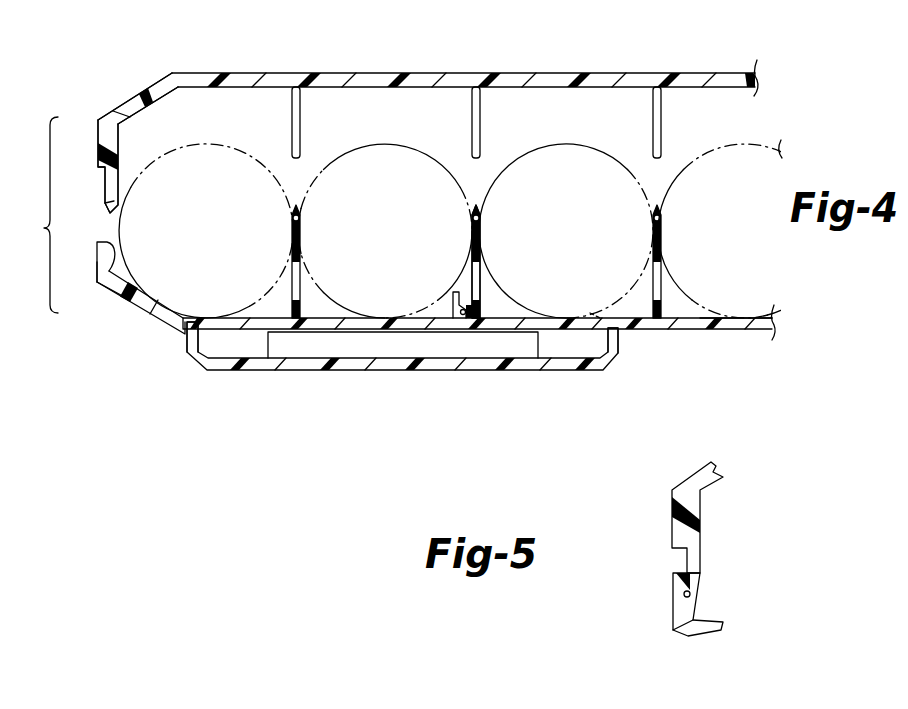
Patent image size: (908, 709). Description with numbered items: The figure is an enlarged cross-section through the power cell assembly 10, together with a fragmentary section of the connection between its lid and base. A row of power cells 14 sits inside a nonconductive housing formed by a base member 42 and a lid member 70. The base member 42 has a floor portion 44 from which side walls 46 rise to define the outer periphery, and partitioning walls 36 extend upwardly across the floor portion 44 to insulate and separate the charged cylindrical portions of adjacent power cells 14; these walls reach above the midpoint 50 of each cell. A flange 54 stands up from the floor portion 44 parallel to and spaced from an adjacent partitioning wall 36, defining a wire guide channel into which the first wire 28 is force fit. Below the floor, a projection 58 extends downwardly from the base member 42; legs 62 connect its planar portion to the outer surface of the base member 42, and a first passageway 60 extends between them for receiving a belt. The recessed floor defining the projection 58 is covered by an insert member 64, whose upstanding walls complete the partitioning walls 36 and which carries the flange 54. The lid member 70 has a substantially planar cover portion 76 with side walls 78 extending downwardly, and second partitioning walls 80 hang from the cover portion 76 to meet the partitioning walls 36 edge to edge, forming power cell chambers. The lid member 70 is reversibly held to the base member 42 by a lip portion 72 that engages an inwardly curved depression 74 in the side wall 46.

In FIG. 4, the power cell assembly 10 is at (287, 18).
In FIG. 4, the power cells 14 is at (286, 180).
In FIG. 4, the first wire 28 is at (479, 268).
In FIG. 4, the partitioning walls 36 is at (304, 311).
In FIG. 4, the base member 42 is at (126, 311).
In FIG. 5, the base member 42 is at (671, 644).
In FIG. 4, the floor portion 44 is at (702, 318).
In FIG. 4, the side walls 46 is at (95, 283).
In FIG. 4, the midpoint 50 is at (207, 230).
In FIG. 4, the flange 54 is at (452, 300).
In FIG. 4, the projection 58 is at (522, 360).
In FIG. 4, the first passageway 60 is at (400, 356).
In FIG. 4, the legs 62 is at (188, 350).
In FIG. 4, the insert member 64 is at (581, 311).
In FIG. 4, the lid member 70 is at (406, 42).
In FIG. 5, the lid member 70 is at (696, 461).
In FIG. 4, the lip portion 72 is at (110, 210).
In FIG. 5, the lip portion 72 is at (690, 603).
In FIG. 4, the inwardly curved depression 74 is at (109, 259).
In FIG. 5, the inwardly curved depression 74 is at (680, 581).
In FIG. 4, the cover portion 76 is at (576, 48).
In FIG. 4, the side walls of lid member 78 is at (103, 142).
In FIG. 4, the second partitioning walls 80 is at (292, 104).